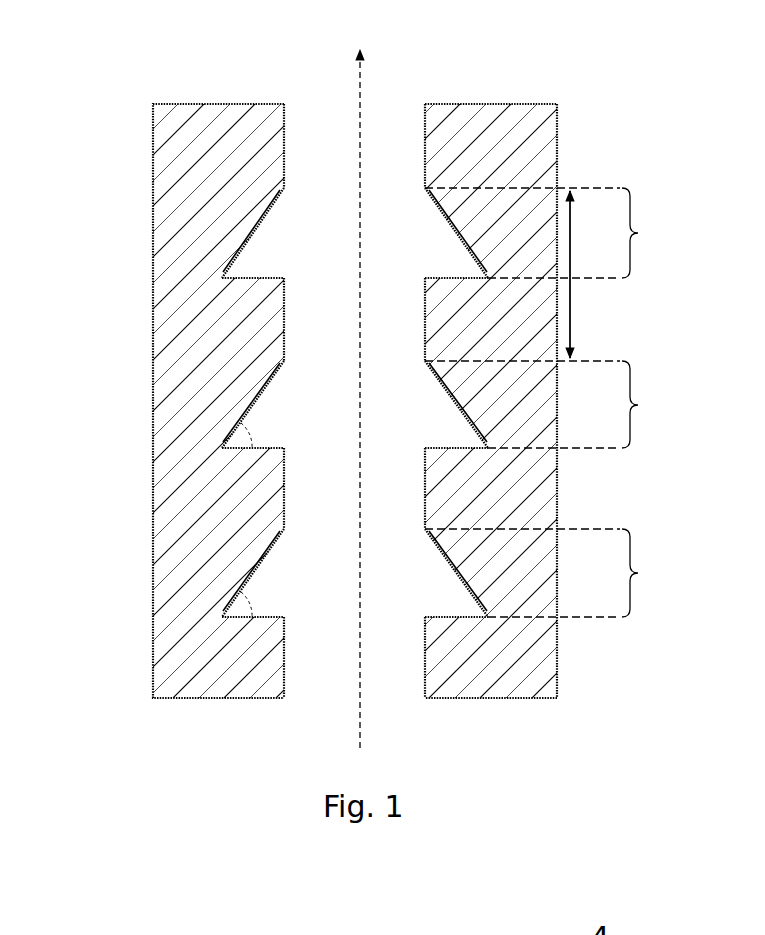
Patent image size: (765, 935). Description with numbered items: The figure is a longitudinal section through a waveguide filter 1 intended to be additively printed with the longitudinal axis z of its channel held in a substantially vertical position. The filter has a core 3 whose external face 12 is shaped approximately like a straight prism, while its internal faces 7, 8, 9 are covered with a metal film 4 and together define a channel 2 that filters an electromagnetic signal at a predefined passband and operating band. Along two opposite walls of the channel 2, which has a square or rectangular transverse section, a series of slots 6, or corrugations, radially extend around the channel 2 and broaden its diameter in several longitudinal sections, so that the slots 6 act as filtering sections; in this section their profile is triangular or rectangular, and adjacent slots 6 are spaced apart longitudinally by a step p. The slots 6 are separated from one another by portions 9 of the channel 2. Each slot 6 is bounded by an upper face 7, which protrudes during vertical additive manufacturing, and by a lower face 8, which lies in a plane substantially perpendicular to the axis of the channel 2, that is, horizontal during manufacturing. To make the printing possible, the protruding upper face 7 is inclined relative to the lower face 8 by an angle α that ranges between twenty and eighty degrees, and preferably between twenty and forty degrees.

The waveguide filter 1 is at (107, 682).
The channel 2 is at (386, 120).
The core 3 is at (480, 118).
The metal film 4 is at (368, 366).
The slots 6 is at (545, 402).
The upper face 7 is at (257, 226).
The lower face 8 is at (271, 272).
The portions 9 is at (288, 313).
The external face 12 is at (557, 150).